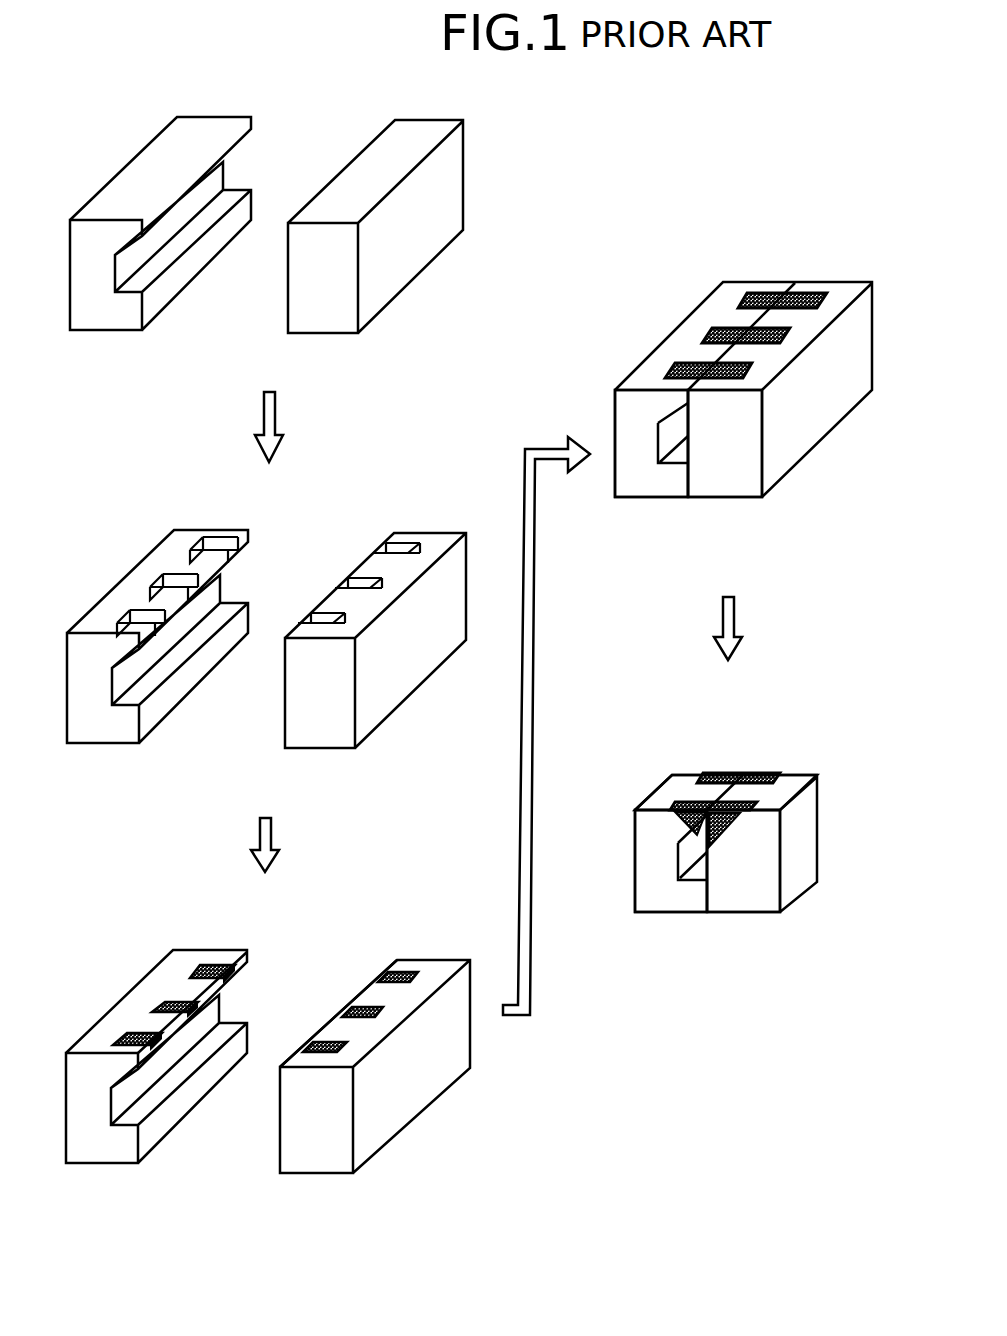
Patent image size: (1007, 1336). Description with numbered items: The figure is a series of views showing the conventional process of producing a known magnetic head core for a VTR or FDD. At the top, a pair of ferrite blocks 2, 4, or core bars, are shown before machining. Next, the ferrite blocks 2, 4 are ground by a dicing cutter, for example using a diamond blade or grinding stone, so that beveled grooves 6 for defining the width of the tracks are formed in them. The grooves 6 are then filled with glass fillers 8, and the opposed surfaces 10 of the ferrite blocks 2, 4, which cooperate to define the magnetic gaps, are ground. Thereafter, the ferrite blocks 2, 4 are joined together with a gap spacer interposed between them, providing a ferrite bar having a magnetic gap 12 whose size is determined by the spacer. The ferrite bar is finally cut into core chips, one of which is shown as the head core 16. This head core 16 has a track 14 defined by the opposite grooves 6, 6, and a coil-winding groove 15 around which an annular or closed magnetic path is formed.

The ferrite block 2 is at (145, 158).
The ferrite block 4 is at (430, 133).
The beveled grooves 6 is at (142, 613).
The glass fillers 8 is at (175, 995).
The opposed surfaces 10 is at (248, 962).
The magnetic gap 12 is at (757, 323).
The track 14 is at (817, 318).
The coil-winding groove 15 is at (670, 428).
The head core 16 is at (835, 806).